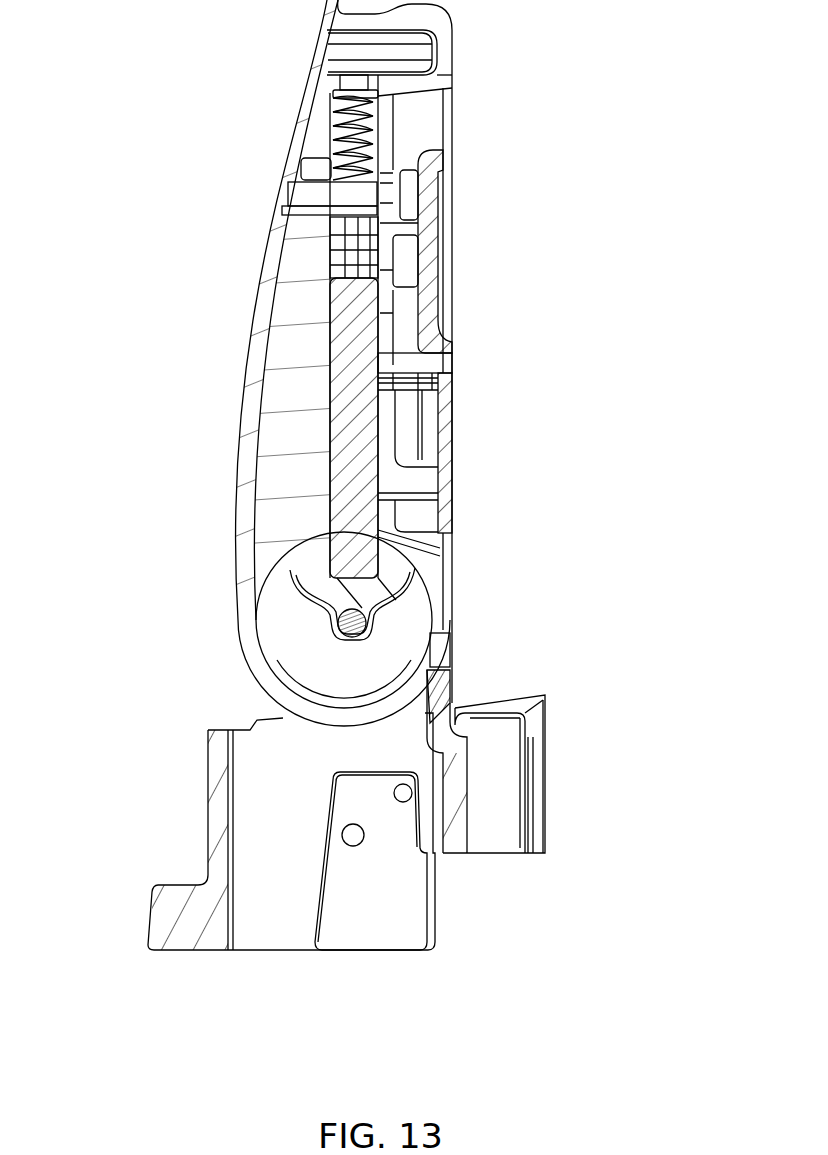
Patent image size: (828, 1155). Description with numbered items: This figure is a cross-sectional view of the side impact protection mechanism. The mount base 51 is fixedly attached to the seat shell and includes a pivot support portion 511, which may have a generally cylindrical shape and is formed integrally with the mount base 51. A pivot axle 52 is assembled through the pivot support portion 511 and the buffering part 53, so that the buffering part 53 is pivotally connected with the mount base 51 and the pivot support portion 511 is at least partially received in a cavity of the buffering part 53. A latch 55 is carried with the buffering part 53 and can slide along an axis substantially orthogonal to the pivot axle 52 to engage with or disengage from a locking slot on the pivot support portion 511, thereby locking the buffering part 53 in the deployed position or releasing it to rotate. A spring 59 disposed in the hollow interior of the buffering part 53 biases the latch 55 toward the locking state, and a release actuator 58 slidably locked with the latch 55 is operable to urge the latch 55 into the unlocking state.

The mount base 51 is at (388, 828).
The pivot axle 52 is at (372, 615).
The buffering part 53 is at (447, 435).
The latch 55 is at (345, 397).
The release actuator 58 is at (428, 255).
The spring 59 is at (327, 143).
The pivot support portion 511 is at (347, 597).